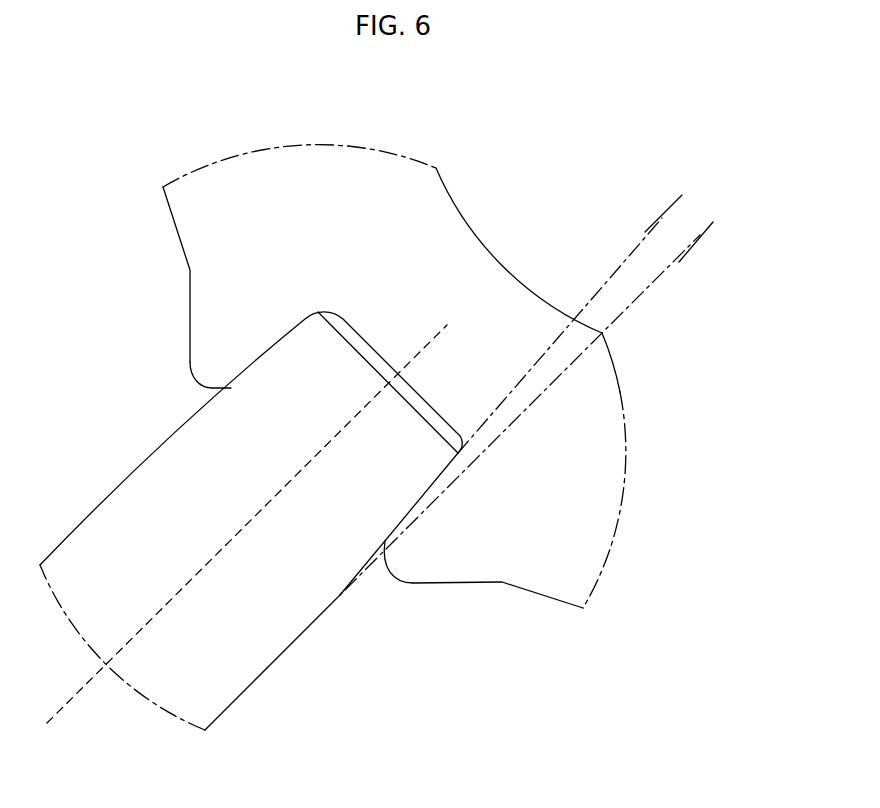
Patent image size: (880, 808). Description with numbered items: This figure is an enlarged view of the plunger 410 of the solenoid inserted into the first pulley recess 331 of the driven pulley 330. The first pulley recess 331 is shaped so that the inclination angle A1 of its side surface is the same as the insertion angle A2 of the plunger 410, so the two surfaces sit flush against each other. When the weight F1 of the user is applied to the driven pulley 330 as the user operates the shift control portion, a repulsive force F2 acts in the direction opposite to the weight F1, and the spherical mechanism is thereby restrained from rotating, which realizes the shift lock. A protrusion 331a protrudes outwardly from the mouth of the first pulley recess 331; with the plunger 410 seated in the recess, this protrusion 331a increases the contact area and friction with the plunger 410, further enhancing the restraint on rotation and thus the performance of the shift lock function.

The driven pulley 330 is at (337, 170).
The first pulley recess 331 is at (418, 503).
The protrusion 331a is at (211, 370).
The plunger 410 is at (92, 552).
The weight F1 is at (272, 334).
The repulsive force F2 is at (290, 354).
The inclination angle A1 is at (600, 177).
The insertion angle A2 is at (529, 406).